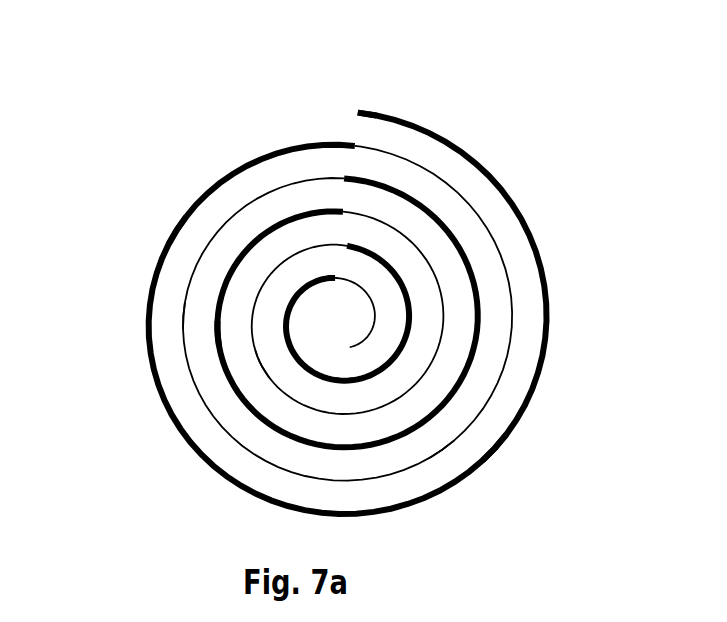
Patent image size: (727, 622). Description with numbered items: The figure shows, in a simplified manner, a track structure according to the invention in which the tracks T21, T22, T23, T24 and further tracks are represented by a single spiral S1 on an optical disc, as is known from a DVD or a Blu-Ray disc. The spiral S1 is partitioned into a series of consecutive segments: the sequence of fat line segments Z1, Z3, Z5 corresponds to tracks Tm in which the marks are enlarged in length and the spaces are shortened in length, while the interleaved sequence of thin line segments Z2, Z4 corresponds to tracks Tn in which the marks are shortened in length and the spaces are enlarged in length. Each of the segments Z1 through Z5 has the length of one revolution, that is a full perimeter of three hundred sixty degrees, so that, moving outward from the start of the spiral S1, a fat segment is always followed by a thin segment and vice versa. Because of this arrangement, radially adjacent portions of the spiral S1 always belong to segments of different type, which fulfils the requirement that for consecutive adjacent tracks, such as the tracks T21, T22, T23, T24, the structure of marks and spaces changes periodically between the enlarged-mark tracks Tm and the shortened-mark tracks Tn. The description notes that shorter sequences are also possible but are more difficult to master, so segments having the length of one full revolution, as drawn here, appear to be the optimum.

The spiral S1 is at (362, 110).
The segment Z1 is at (418, 113).
The segment Z2 is at (450, 183).
The segment Z3 is at (467, 254).
The segment Z4 is at (448, 308).
The segment Z5 is at (400, 347).
The track T21 is at (176, 234).
The track T22 is at (182, 305).
The track T23 is at (217, 340).
The track T24 is at (262, 373).
The track Tm is at (495, 448).
The track Tn is at (428, 464).